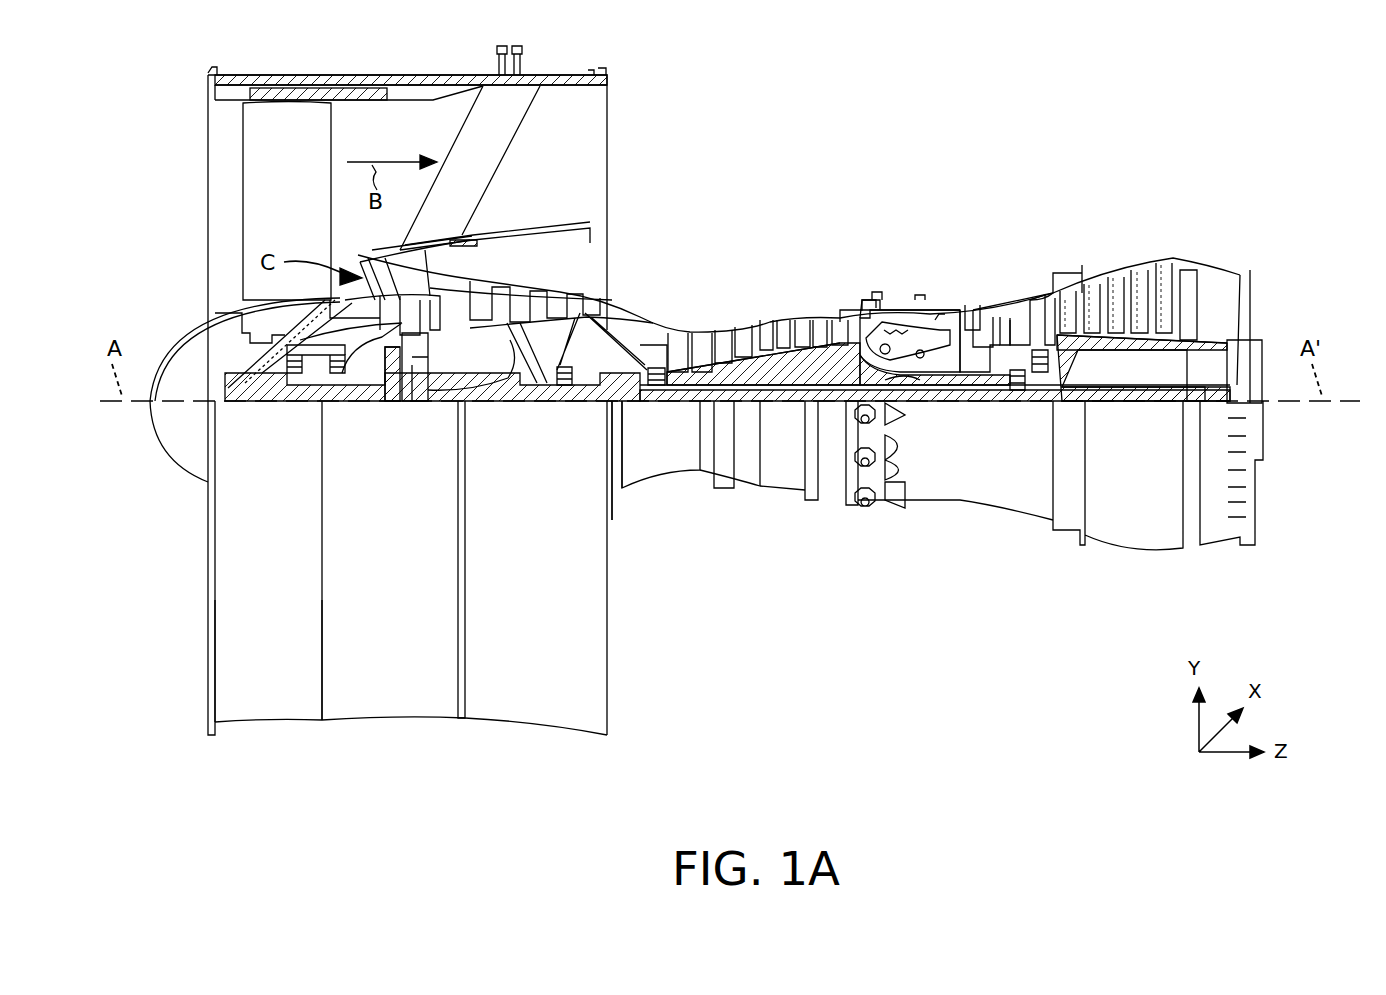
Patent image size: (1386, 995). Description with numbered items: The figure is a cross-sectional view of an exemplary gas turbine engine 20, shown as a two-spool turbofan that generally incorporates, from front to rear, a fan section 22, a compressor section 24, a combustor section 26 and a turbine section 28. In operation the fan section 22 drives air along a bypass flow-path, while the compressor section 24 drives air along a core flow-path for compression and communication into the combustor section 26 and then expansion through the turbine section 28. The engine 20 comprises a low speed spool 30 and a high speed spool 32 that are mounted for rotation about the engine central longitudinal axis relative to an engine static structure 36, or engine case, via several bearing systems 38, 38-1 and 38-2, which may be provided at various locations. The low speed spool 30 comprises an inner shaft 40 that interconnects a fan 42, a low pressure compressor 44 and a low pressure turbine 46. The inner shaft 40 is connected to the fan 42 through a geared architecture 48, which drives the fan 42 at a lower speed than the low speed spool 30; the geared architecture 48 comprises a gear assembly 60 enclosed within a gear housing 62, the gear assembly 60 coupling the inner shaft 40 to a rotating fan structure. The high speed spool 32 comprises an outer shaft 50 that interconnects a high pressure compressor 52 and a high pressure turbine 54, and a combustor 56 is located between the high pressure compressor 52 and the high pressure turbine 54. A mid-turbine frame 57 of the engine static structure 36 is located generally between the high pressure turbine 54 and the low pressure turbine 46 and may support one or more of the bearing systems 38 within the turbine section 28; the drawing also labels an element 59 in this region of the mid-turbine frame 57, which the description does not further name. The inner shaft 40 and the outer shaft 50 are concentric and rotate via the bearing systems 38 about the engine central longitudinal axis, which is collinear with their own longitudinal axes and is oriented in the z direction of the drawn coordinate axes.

The gas turbine engine 20 is at (962, 118).
The fan section 22 is at (456, 52).
The compressor section 24 is at (867, 193).
The combustor section 26 is at (965, 193).
The turbine section 28 is at (1195, 193).
The low speed spool 30 is at (788, 422).
The high speed spool 32 is at (824, 368).
The engine static structure 36 is at (385, 698).
The bearing system 38 is at (1030, 401).
The bearing system 38-1 is at (298, 378).
The bearing system 38-2 is at (556, 398).
The inner shaft 40 is at (632, 403).
The fan 42 is at (293, 209).
The low pressure compressor 44 is at (548, 295).
The low pressure turbine 46 is at (1125, 270).
The geared architecture 48 is at (417, 420).
The outer shaft 50 is at (907, 385).
The high pressure compressor 52 is at (762, 368).
The high pressure turbine 54 is at (984, 312).
The combustor 56 is at (903, 340).
The mid-turbine frame 57 is at (1022, 330).
The airfoils 59 is at (1042, 312).
The gear assembly 60 is at (425, 388).
The gear housing 62 is at (428, 353).